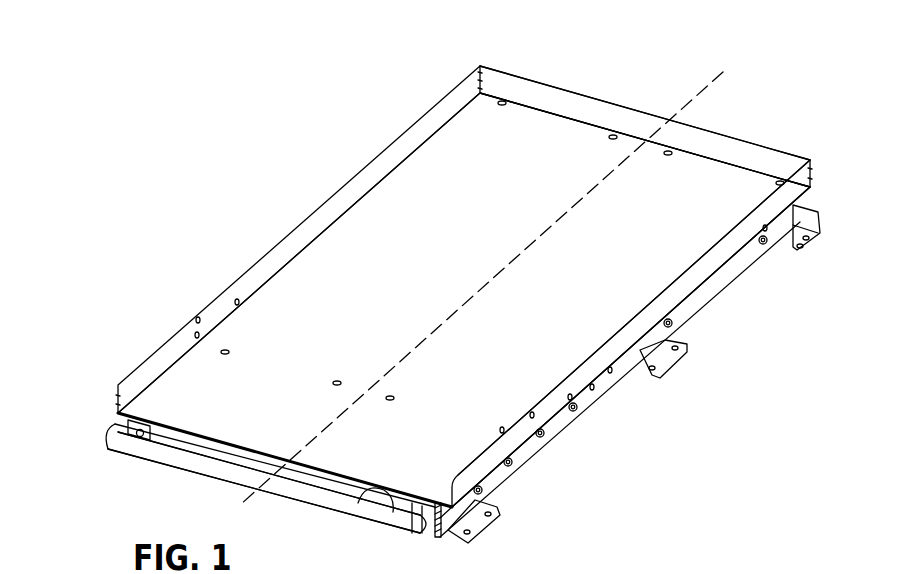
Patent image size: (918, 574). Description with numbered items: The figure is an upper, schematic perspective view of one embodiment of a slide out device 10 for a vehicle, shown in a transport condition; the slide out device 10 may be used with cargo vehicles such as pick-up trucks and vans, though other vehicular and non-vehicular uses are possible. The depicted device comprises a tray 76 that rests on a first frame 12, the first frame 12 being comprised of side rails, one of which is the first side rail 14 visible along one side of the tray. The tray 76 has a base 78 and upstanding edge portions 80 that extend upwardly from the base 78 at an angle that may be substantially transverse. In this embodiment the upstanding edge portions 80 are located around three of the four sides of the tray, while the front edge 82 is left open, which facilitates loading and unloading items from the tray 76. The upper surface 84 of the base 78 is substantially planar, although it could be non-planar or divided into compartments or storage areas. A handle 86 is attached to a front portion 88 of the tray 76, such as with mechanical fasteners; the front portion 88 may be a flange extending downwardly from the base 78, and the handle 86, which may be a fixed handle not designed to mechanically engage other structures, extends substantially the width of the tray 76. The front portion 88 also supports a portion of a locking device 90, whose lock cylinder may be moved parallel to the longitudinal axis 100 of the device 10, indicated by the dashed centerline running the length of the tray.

The slide out device 10 is at (276, 221).
The first frame 12 is at (697, 306).
The first side rail 14 is at (738, 265).
The tray 76 is at (552, 135).
The base 78 is at (703, 172).
The upstanding edge portions 80 is at (218, 303).
The front edge 82 is at (96, 418).
The upper surface 84 is at (428, 289).
The handle 86 is at (342, 505).
The front portion 88 is at (134, 469).
The locking device 90 is at (370, 496).
The longitudinal axis 100 is at (719, 75).